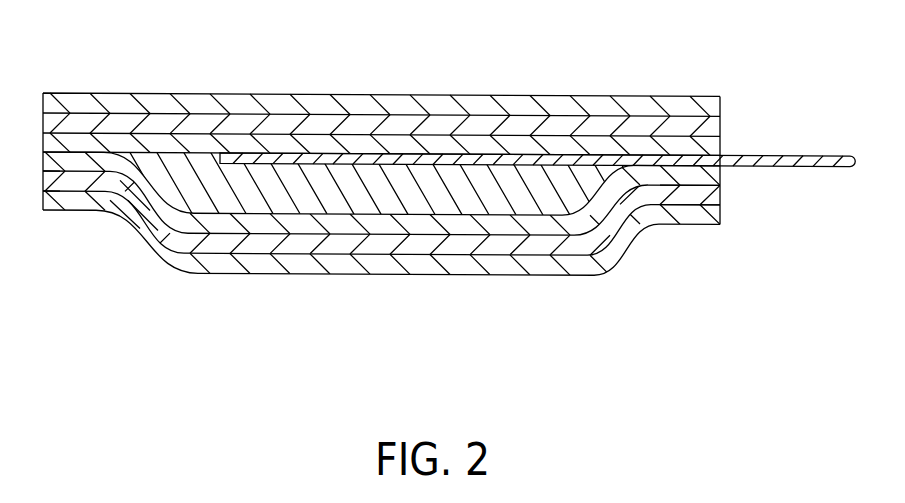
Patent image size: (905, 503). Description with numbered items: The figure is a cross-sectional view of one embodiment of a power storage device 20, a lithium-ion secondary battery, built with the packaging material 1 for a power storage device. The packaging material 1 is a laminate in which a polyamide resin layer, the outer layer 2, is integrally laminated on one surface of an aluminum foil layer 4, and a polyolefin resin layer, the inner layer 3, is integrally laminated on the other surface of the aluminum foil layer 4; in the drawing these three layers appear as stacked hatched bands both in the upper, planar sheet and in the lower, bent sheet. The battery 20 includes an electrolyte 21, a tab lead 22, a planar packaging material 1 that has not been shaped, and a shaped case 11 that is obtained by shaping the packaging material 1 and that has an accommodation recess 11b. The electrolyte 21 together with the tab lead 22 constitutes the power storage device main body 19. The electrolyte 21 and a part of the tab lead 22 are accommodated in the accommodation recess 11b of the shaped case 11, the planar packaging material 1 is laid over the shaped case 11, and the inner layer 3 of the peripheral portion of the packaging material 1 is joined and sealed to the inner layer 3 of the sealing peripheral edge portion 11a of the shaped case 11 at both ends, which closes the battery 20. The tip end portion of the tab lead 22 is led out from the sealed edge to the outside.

The packaging material for a power storage device 1 is at (652, 102).
The polyamide resin layer (outer layer) 2 is at (301, 99).
The polyolefin resin layer (inner layer) 3 is at (250, 146).
The aluminum foil layer 4 is at (359, 124).
The shaped case 11 is at (697, 269).
The sealing peripheral edge portion 11a is at (78, 162).
The accommodation recess 11b is at (236, 214).
The power storage device main body 19 is at (452, 183).
The power storage device 20 is at (448, 224).
The electrolyte 21 is at (513, 198).
The tab lead 22 is at (818, 162).